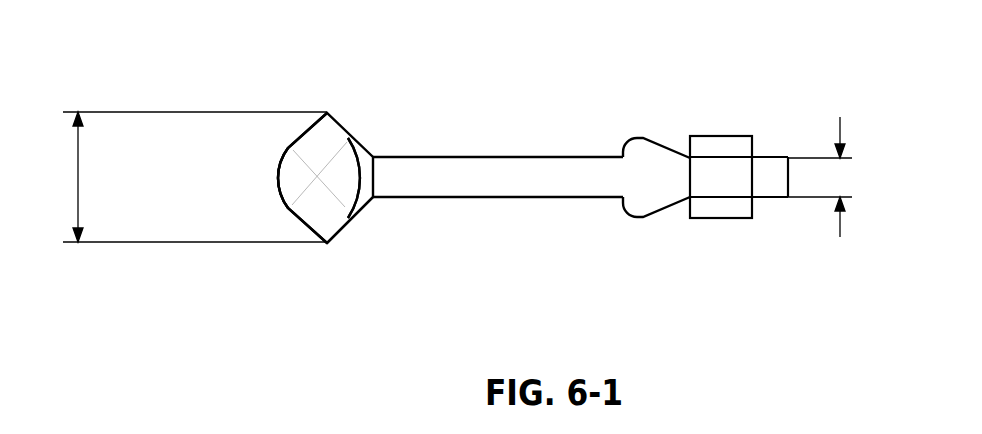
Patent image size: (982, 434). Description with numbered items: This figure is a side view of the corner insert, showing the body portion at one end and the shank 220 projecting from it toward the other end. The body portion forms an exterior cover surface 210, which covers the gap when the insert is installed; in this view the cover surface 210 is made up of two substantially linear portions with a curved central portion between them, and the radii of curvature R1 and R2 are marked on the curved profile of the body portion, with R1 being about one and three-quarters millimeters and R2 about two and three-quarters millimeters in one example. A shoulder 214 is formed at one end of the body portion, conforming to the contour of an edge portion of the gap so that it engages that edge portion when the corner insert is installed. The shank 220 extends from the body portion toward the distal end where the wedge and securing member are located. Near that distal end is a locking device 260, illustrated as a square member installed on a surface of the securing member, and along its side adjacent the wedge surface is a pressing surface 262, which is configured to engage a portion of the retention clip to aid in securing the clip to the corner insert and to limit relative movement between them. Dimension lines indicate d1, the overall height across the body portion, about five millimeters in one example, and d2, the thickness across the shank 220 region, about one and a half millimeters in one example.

The cover surface 210 is at (290, 110).
The shoulder 214 is at (353, 216).
The shank 220 is at (555, 207).
The locking device 260 is at (713, 142).
The pressing surface 262 is at (690, 150).
The radius of curvature R1 is at (272, 155).
The radius of curvature R2 is at (370, 176).
The dimension d1 is at (181, 177).
The dimension d2 is at (830, 177).